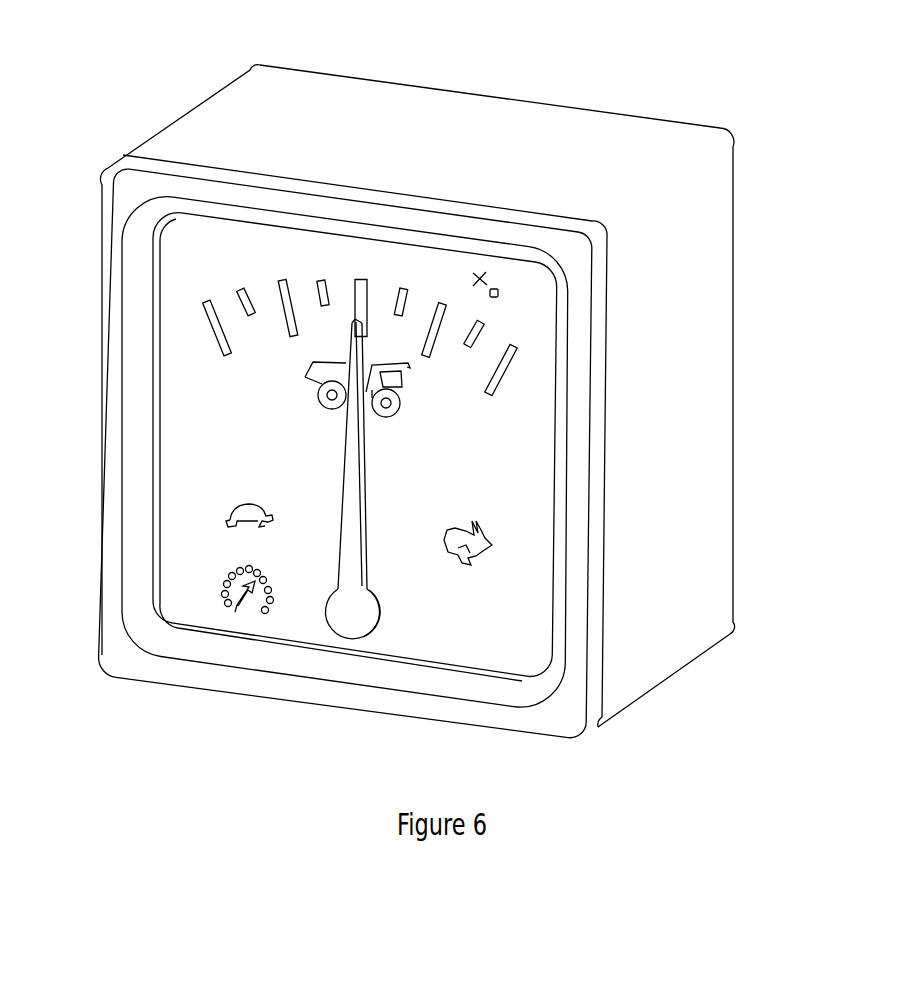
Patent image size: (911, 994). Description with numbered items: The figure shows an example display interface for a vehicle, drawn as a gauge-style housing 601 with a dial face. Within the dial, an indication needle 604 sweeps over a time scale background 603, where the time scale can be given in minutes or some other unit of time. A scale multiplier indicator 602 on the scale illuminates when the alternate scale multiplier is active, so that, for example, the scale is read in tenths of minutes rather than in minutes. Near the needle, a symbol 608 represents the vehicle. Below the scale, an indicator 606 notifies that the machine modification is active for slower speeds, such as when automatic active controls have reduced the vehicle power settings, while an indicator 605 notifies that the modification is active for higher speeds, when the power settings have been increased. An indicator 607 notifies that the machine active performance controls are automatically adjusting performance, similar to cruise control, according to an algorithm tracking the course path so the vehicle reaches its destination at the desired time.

The gauge housing 601 is at (682, 708).
The scale multiplier indicator 602 is at (527, 282).
The time scale background 603 is at (527, 373).
The indication needle 604 is at (388, 465).
The indicator 605 is at (502, 538).
The indicator 606 is at (215, 535).
The indicator 607 is at (212, 608).
The symbol 608 is at (322, 347).